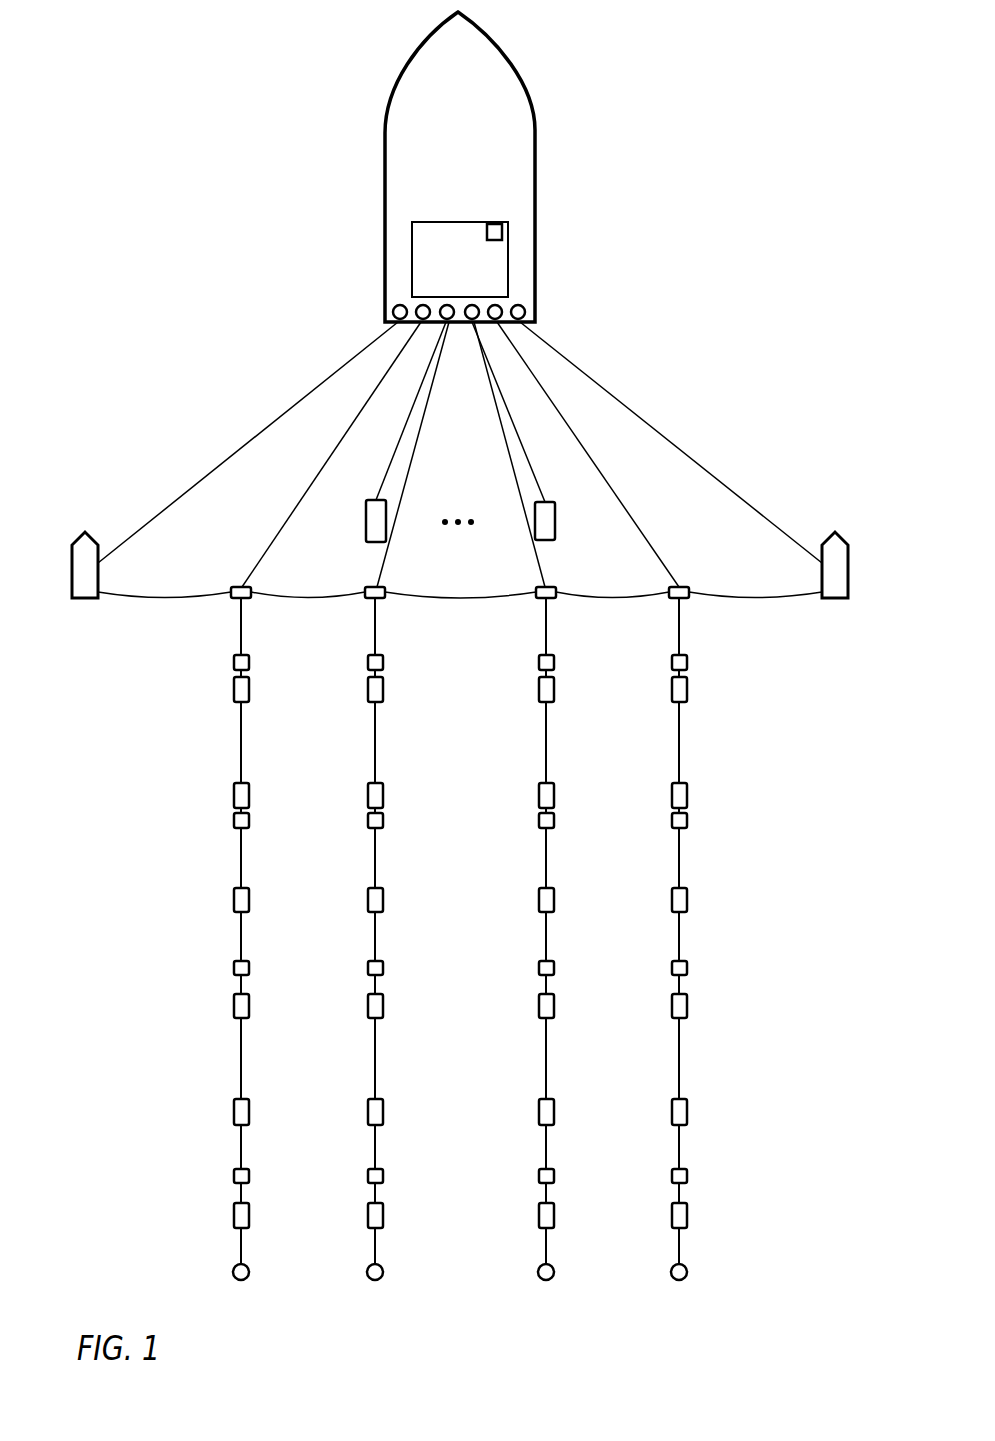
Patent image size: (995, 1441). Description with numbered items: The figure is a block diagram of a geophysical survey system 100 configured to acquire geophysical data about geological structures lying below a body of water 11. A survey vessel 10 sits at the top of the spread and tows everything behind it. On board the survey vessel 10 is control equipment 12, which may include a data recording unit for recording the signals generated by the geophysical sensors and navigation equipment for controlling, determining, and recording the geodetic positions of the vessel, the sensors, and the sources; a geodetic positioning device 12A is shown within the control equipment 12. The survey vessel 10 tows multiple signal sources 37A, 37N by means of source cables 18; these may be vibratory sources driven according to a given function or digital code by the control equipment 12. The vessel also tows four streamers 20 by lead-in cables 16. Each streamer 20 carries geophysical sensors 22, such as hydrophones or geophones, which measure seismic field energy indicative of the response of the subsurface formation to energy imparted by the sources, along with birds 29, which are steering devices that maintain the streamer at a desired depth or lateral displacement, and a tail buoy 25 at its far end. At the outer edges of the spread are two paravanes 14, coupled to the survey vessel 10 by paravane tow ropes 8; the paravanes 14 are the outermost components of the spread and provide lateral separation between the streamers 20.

The geophysical survey system 100 is at (148, 60).
The survey vessel 10 is at (471, 143).
The body of water 11 is at (814, 185).
The control equipment 12 is at (483, 221).
The geodetic positioning device 12A is at (502, 231).
The paravane tow ropes 8 is at (267, 433).
The paravanes 14 is at (72, 574).
The lead-in cables 16 is at (265, 557).
The source cables 18 is at (521, 443).
The signal source 37A is at (376, 543).
The signal source 37N is at (545, 541).
The streamers 20 is at (241, 630).
The geophysical sensors 22 is at (383, 690).
The birds 29 is at (383, 663).
The tail buoys 25 is at (374, 1280).